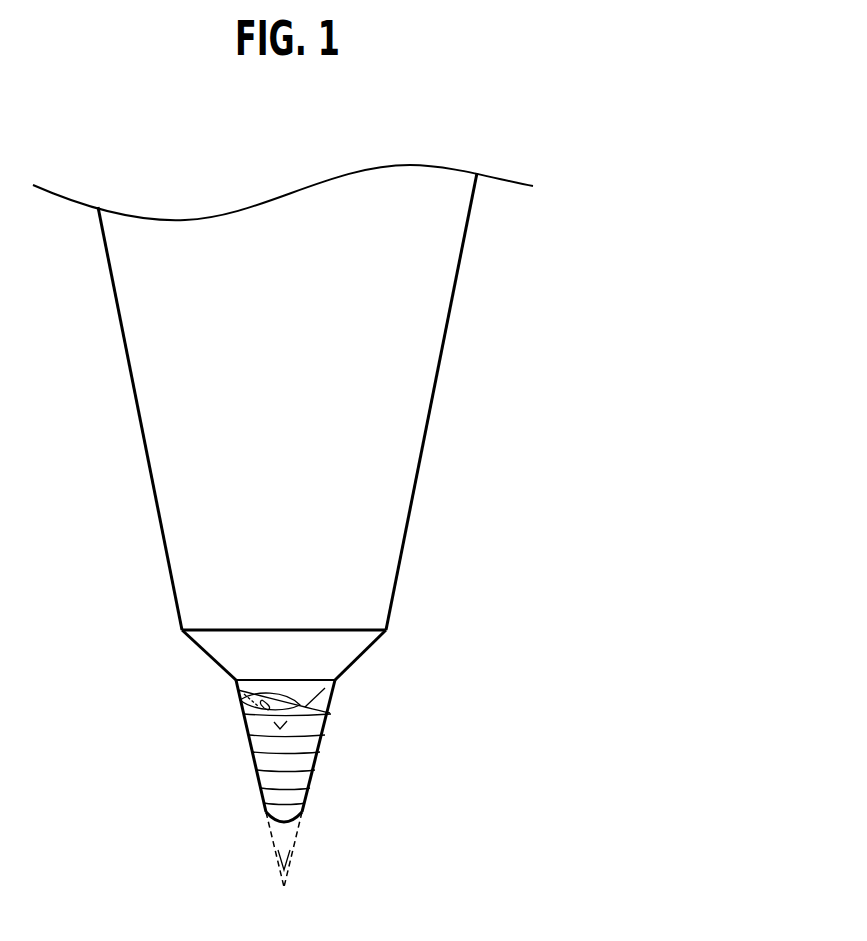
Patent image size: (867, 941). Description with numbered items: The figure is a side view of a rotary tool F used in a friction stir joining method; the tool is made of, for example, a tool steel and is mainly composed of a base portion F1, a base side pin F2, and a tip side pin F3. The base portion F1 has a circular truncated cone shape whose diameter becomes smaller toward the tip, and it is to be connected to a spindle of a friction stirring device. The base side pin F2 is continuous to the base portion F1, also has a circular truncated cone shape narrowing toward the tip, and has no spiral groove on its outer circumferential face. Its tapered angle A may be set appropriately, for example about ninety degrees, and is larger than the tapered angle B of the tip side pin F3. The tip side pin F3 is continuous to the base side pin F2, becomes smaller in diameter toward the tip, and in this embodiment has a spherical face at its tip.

The rotary tool F is at (541, 254).
The base portion F1 is at (418, 322).
The base side pin F2 is at (345, 650).
The tip side pin F3 is at (300, 748).
The tapered angle A is at (237, 690).
The tapered angle B is at (285, 862).